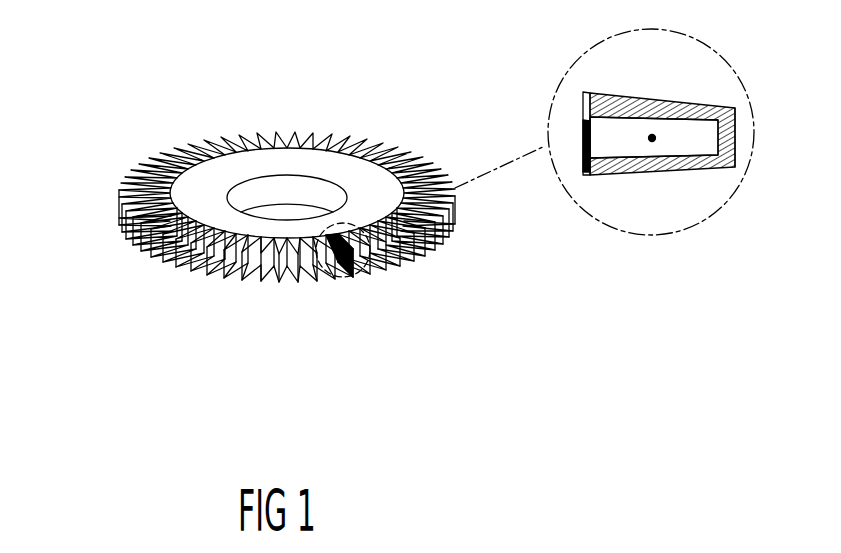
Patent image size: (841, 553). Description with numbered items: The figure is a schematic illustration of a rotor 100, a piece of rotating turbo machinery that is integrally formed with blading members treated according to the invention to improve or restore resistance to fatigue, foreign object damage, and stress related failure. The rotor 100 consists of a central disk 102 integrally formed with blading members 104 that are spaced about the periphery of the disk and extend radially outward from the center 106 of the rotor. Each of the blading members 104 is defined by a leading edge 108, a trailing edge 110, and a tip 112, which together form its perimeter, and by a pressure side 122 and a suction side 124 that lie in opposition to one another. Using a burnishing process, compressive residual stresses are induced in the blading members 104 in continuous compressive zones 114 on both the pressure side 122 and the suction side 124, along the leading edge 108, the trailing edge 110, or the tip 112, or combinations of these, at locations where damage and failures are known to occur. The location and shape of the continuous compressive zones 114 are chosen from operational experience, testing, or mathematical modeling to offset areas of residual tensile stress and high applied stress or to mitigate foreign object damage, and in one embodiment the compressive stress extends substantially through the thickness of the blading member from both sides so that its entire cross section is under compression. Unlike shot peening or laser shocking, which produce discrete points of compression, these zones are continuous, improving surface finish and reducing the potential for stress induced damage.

The rotor 100 is at (307, 182).
The central disk 102 is at (320, 160).
The blading members 104 is at (125, 223).
The center 106 is at (268, 183).
The leading edge 108 is at (693, 100).
The trailing edge 110 is at (672, 173).
The tip 112 is at (733, 137).
The continuous compressive zones 114 is at (342, 278).
The pressure side 122 is at (187, 253).
The suction side 124 is at (400, 265).